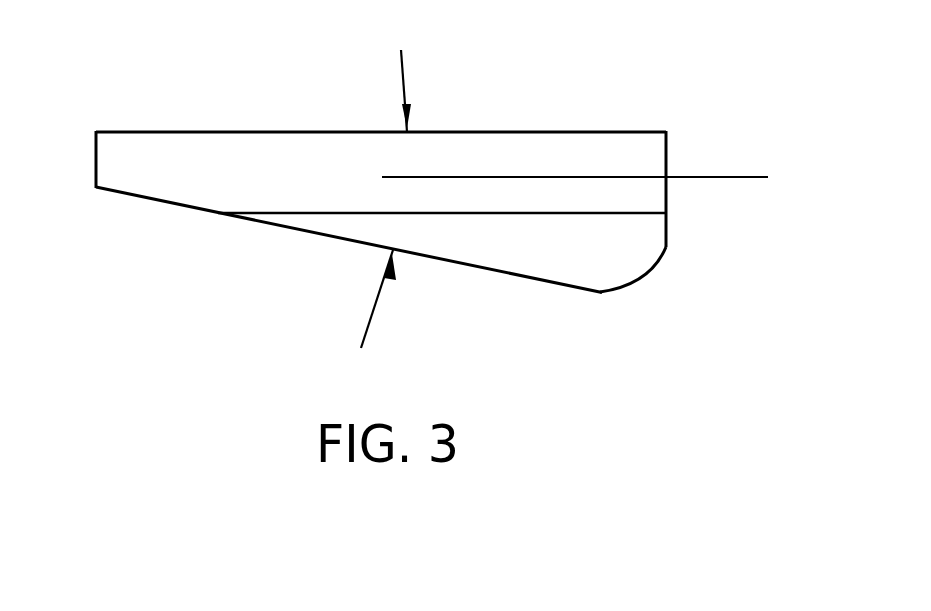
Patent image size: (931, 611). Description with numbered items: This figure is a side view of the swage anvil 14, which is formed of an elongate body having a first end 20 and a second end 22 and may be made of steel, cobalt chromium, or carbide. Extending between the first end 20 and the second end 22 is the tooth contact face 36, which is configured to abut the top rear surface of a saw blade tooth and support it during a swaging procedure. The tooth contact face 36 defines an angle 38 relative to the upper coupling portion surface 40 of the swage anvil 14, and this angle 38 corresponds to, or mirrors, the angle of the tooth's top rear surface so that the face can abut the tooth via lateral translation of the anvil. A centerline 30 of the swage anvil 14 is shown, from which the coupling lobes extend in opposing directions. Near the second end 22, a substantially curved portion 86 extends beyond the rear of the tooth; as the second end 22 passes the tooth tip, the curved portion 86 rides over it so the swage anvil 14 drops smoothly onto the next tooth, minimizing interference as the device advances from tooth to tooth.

The swage anvil 14 is at (736, 131).
The first end 20 is at (105, 124).
The second end 22 is at (657, 116).
The centerline 30 is at (690, 177).
The tooth contact face 36 is at (242, 214).
The angle 38 is at (403, 65).
The upper coupling portion surface 40 is at (243, 124).
The curved portion 86 is at (640, 292).